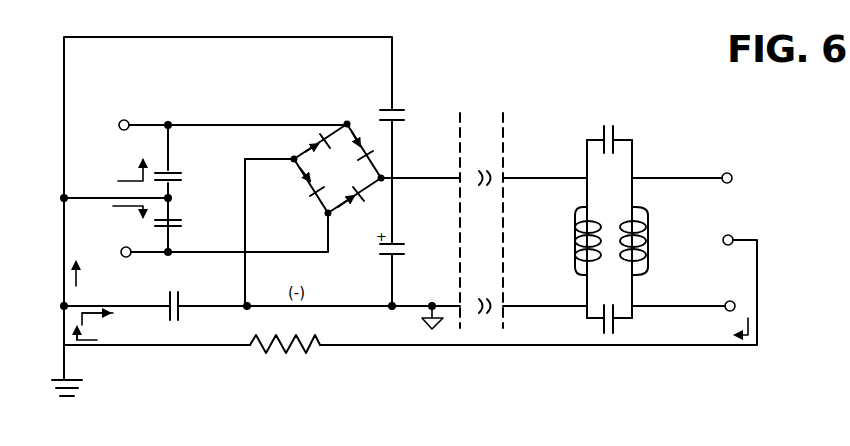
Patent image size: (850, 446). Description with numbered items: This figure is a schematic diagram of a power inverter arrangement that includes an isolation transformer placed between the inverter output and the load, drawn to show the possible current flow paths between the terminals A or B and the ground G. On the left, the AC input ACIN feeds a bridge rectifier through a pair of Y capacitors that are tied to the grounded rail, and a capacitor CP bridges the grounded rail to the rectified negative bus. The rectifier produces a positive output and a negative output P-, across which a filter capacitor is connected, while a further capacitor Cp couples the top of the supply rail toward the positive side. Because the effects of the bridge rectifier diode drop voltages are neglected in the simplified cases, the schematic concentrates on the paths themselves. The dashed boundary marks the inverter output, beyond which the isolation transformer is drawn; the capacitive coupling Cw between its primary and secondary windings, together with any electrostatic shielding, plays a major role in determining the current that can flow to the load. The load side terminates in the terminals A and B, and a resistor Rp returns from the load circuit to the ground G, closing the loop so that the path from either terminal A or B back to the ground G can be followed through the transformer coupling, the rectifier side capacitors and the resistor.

The AC input terminals ACIN is at (161, 112).
The Y capacitors Y is at (157, 189).
The capacitor CP is at (171, 294).
The capacitor Cp is at (404, 116).
The negative DC output P(-) P- is at (401, 326).
The capacitive coupling Cw is at (609, 127).
The terminal A is at (717, 165).
The terminal B is at (720, 320).
The resistor Rp is at (285, 362).
The ground G is at (82, 329).